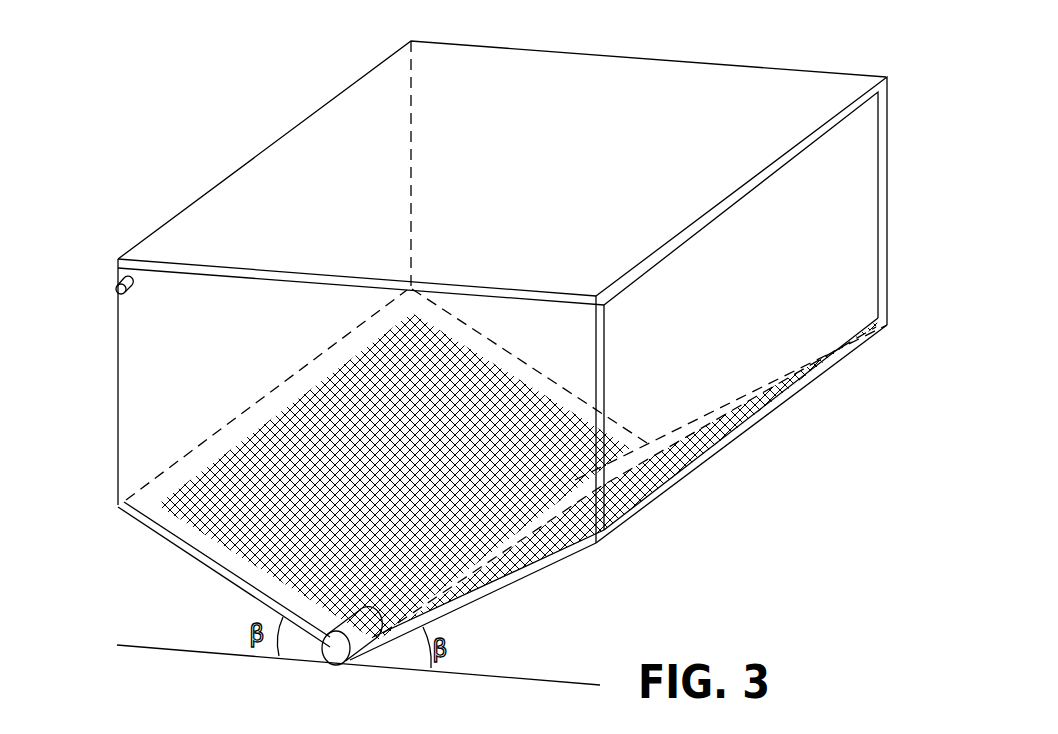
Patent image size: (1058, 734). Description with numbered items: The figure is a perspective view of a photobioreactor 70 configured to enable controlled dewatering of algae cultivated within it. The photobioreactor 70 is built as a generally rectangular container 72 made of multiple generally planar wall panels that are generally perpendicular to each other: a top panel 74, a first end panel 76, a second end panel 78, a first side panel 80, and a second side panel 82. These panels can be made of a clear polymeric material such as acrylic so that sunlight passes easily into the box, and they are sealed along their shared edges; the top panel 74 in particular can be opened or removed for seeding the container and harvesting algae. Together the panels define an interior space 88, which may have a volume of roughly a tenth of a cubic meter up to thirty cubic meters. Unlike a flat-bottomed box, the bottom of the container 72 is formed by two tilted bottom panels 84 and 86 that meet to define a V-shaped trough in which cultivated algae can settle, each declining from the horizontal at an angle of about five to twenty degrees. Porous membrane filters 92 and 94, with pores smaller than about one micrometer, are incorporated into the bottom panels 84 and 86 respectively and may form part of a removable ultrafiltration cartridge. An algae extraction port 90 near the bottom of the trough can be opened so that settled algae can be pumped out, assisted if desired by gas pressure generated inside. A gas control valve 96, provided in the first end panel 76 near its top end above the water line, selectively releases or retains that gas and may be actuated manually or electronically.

The photobioreactor 70 is at (203, 111).
The container 72 is at (154, 207).
The top panel 74 is at (843, 86).
The first end panel 76 is at (137, 421).
The second end panel 78 is at (890, 122).
The first side panel 80 is at (116, 328).
The second side panel 82 is at (860, 250).
The bottom panel 84 is at (227, 575).
The bottom panel 86 is at (510, 587).
The interior space 88 is at (840, 308).
The algae extraction port 90 is at (365, 652).
The porous membrane filter 92 is at (295, 422).
The porous membrane filter 94 is at (707, 427).
The gas control valve 96 is at (134, 284).